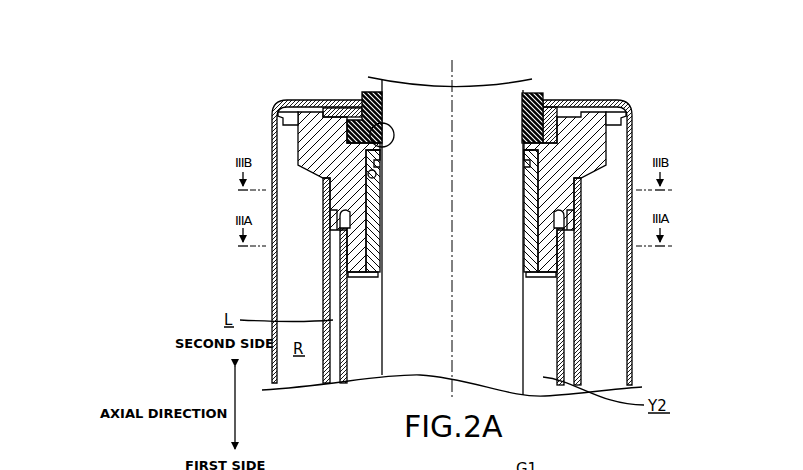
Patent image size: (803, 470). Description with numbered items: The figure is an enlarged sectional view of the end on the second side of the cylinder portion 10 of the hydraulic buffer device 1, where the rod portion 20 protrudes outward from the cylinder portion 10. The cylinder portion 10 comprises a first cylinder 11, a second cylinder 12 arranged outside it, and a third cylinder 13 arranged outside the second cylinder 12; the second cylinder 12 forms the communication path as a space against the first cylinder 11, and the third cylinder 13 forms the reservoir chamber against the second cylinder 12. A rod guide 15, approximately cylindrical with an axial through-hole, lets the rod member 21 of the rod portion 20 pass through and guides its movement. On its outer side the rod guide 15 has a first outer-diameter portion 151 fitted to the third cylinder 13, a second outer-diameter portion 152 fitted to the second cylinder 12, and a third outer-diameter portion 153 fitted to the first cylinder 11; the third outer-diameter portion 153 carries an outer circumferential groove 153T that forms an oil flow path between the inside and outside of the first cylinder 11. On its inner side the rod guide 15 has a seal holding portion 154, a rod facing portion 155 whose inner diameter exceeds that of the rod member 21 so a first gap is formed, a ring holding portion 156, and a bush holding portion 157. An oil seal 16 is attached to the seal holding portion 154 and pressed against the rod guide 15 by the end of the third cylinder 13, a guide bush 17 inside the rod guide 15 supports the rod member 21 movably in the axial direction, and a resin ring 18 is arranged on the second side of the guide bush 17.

The hydraulic buffer device 1 is at (251, 60).
The cylinder portion 10 is at (640, 100).
The first cylinder 11 is at (565, 312).
The second cylinder 12 is at (580, 342).
The third cylinder 13 is at (632, 373).
The rod guide 15 is at (628, 147).
The oil seal 16 is at (547, 108).
The guide bush 17 is at (537, 253).
The resin ring 18 is at (368, 152).
The rod portion 20 is at (508, 75).
The rod member 21 is at (372, 83).
The first outer-diameter portion 151 is at (292, 128).
The second outer-diameter portion 152 is at (372, 160).
The third outer-diameter portion 153 is at (343, 237).
The outer circumferential groove 153T is at (347, 258).
The seal holding portion 154 is at (553, 136).
The rod facing portion 155 is at (340, 104).
The ring holding portion 156 is at (370, 172).
The bush holding portion 157 is at (325, 218).